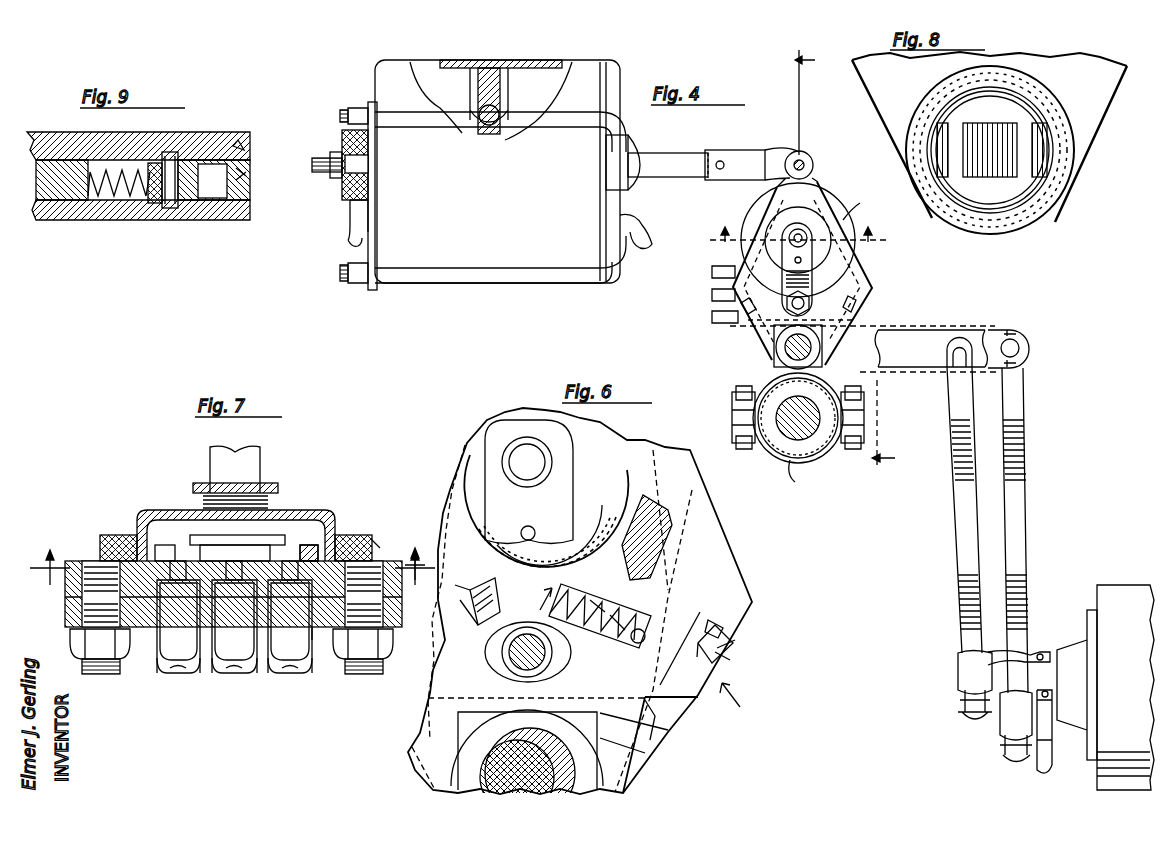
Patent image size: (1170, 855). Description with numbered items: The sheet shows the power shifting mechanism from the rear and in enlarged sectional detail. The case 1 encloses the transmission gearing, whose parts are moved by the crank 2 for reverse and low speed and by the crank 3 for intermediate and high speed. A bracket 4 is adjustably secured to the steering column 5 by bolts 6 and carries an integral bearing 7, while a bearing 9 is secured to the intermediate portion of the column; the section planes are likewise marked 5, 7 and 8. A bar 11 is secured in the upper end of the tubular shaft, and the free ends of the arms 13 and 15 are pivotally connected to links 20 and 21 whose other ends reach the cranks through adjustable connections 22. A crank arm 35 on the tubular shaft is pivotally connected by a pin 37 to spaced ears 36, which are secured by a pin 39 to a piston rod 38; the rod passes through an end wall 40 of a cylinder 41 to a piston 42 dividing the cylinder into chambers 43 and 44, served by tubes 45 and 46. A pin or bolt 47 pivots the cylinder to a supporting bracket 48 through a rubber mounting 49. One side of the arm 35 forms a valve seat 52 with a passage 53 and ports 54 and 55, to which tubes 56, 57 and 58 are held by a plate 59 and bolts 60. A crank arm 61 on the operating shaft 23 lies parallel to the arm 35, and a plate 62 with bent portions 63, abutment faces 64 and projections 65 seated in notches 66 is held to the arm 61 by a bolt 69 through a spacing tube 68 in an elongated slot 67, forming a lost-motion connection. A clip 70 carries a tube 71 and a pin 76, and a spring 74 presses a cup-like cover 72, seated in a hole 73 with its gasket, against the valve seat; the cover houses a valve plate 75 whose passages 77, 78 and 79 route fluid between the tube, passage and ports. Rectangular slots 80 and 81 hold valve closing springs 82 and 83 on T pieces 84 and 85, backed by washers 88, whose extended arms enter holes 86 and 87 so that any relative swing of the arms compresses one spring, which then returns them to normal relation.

In FIG. 4, the case 1 is at (1115, 592).
In FIG. 4, the crank 2 is at (1053, 740).
In FIG. 4, the crank 3 is at (1045, 650).
In FIG. 4, the bracket 4 is at (815, 462).
In FIG. 4, the steering column 5 is at (849, 274).
In FIG. 4, the bolts 6 is at (746, 446).
In FIG. 4, the bearing 7 is at (800, 247).
In FIG. 7, the section line 8- 8 is at (232, 581).
In FIG. 6, the section line 8- 8 is at (415, 575).
In FIG. 4, the bearing 9 is at (770, 390).
In FIG. 6, the bearing 9 is at (634, 653).
In FIG. 4, the bar 11 is at (823, 352).
In FIG. 6, the bar 11 is at (500, 758).
In FIG. 4, the arm 13 is at (918, 368).
In FIG. 4, the arm 15 is at (990, 330).
In FIG. 4, the link 20 is at (962, 512).
In FIG. 4, the link 21 is at (1020, 520).
In FIG. 4, the adjustable connections 22 is at (968, 670).
In FIG. 4, the operating shaft 23 is at (785, 349).
In FIG. 6, the operating shaft 23 is at (548, 758).
In FIG. 9, the crank arm 35 is at (48, 180).
In FIG. 4, the crank arm 35 is at (860, 202).
In FIG. 7, the crank arm 35 is at (62, 575).
In FIG. 6, the crank arm 35 is at (663, 690).
In FIG. 4, the spaced ears 36 is at (770, 150).
In FIG. 4, the pin 37 is at (814, 165).
In FIG. 4, the piston rod 38 is at (695, 158).
In FIG. 4, the pin 39 is at (720, 162).
In FIG. 4, the end wall 40 is at (625, 192).
In FIG. 4, the cylinder 41 is at (598, 248).
In FIG. 4, the piston 42 is at (478, 130).
In FIG. 4, the chamber 43 is at (437, 95).
In FIG. 4, the chamber 44 is at (532, 100).
In FIG. 4, the tube 45 is at (348, 238).
In FIG. 4, the tube 46 is at (650, 246).
In FIG. 4, the pin or bolt 47 is at (318, 170).
In FIG. 4, the supporting bracket 48 is at (350, 210).
In FIG. 4, the rubber mounting 49 is at (346, 145).
In FIG. 7, the valve seat 52 is at (284, 504).
In FIG. 7, the passage 53 is at (234, 580).
In FIG. 7, the port 54 is at (183, 580).
In FIG. 7, the port 55 is at (291, 580).
In FIG. 4, the tube 56 is at (712, 294).
In FIG. 7, the tube 56 is at (240, 672).
In FIG. 4, the tube 57 is at (712, 270).
In FIG. 7, the tube 57 is at (185, 672).
In FIG. 4, the tube 58 is at (712, 317).
In FIG. 7, the tube 58 is at (296, 672).
In FIG. 7, the plate 59 is at (318, 640).
In FIG. 7, the bolts 60 is at (100, 670).
In FIG. 9, the crank arm 61 is at (72, 148).
In FIG. 4, the crank arm 61 is at (864, 218).
In FIG. 8, the crank arm 61 is at (892, 110).
In FIG. 7, the crank arm 61 is at (374, 540).
In FIG. 6, the crank arm 61 is at (717, 558).
In FIG. 9, the plate 62 is at (212, 200).
In FIG. 6, the plate 62 is at (672, 687).
In FIG. 9, the bent portion 63 is at (248, 186).
In FIG. 6, the bent portion 63 is at (735, 640).
In FIG. 9, the abutment faces 64 is at (242, 170).
In FIG. 6, the abutment faces 64 is at (697, 670).
In FIG. 9, the projection 65 is at (250, 140).
In FIG. 4, the projection 65 is at (868, 308).
In FIG. 6, the projection 65 is at (730, 660).
In FIG. 6, the notch 66 is at (710, 628).
In FIG. 6, the elongated slot 67 is at (560, 660).
In FIG. 6, the spacing tube 68 is at (504, 665).
In FIG. 4, the bolt 69 is at (812, 305).
In FIG. 6, the bolt 69 is at (509, 652).
In FIG. 4, the clip 70 is at (814, 262).
In FIG. 7, the clip 70 is at (198, 484).
In FIG. 6, the clip 70 is at (505, 500).
In FIG. 4, the tube 71 is at (809, 232).
In FIG. 7, the tube 71 is at (250, 470).
In FIG. 6, the tube 71 is at (552, 460).
In FIG. 4, the cup-like cover 72 is at (776, 218).
In FIG. 8, the cup-like cover 72 is at (1045, 212).
In FIG. 7, the cup-like cover 72 is at (168, 512).
In FIG. 6, the cup-like cover 72 is at (468, 480).
In FIG. 8, the hole 73 is at (1028, 218).
In FIG. 7, the hole 73 is at (118, 533).
In FIG. 6, the hole 73 is at (640, 470).
In FIG. 7, the spring 74 is at (270, 500).
In FIG. 8, the valve plate 75 is at (1008, 205).
In FIG. 7, the valve plate 75 is at (312, 530).
In FIG. 4, the pin 76 is at (794, 261).
In FIG. 6, the pin 76 is at (530, 528).
In FIG. 8, the passage 77 is at (946, 170).
In FIG. 7, the passage 77 is at (165, 547).
In FIG. 8, the passage 78 is at (1040, 140).
In FIG. 7, the passage 78 is at (308, 548).
In FIG. 8, the passage 79 is at (1000, 128).
In FIG. 7, the passage 79 is at (230, 548).
In FIG. 6, the rectangular slot 80 is at (620, 616).
In FIG. 6, the rectangular slot 81 is at (470, 590).
In FIG. 6, the valve closing spring 82 is at (578, 595).
In FIG. 6, the valve closing spring 83 is at (498, 592).
In FIG. 9, the T piece 84 is at (146, 198).
In FIG. 6, the T piece 84 is at (604, 596).
In FIG. 6, the T piece 85 is at (472, 608).
In FIG. 9, the hole 86 is at (168, 152).
In FIG. 9, the hole 87 is at (160, 206).
In FIG. 6, the washer or integral formation 88 is at (640, 628).